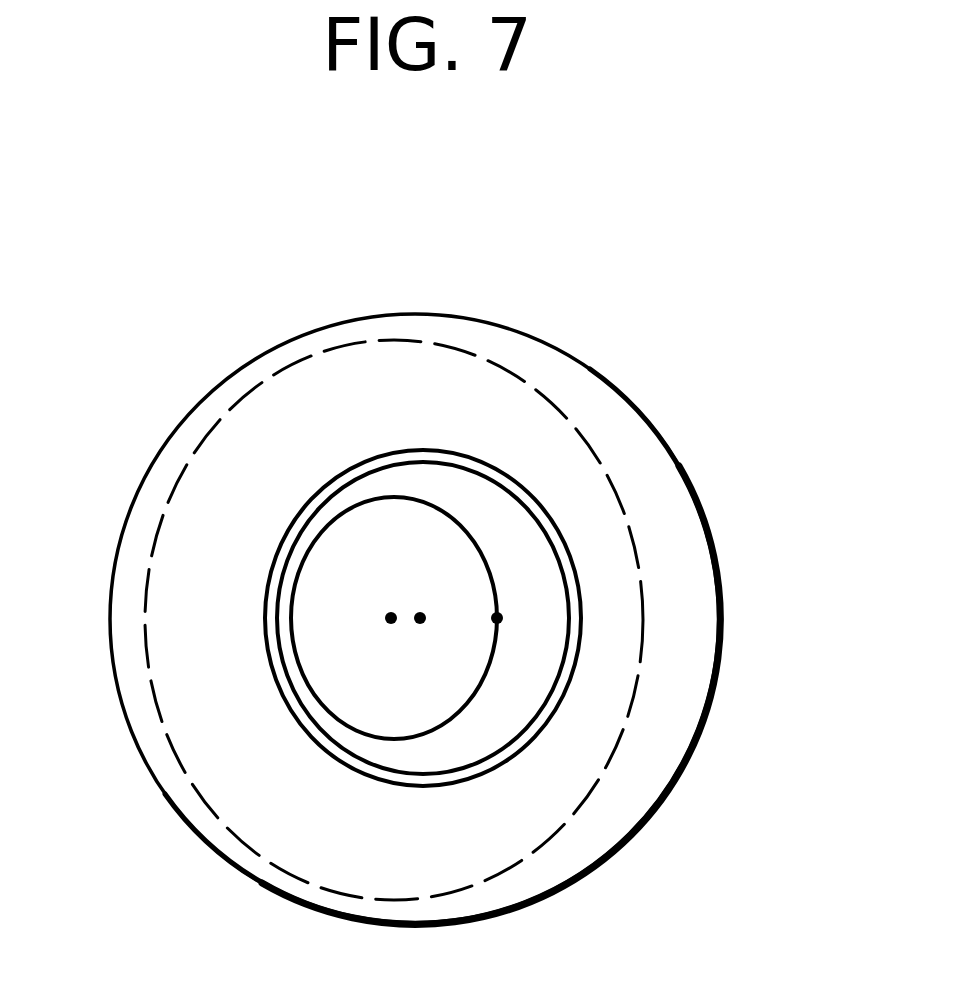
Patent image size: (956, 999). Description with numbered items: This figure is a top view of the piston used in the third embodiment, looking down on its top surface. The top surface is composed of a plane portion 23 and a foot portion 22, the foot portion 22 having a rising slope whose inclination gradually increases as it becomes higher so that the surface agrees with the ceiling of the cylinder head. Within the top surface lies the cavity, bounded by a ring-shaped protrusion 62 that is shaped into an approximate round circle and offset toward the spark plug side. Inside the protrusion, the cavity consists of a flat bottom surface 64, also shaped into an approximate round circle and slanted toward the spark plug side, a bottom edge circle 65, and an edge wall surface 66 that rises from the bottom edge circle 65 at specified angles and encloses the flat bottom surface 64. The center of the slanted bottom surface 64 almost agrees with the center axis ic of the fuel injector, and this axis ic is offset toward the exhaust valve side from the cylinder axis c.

The foot portion 22 is at (205, 520).
The plane portion 23 is at (643, 463).
The ring-shaped protrusion 62 is at (555, 715).
The flat bottom surface 64 is at (338, 677).
The bottom edge circle 65 is at (497, 618).
The edge wall surface 66 is at (528, 658).
The vertical axis ic is at (391, 612).
The cylinder axis c is at (420, 624).